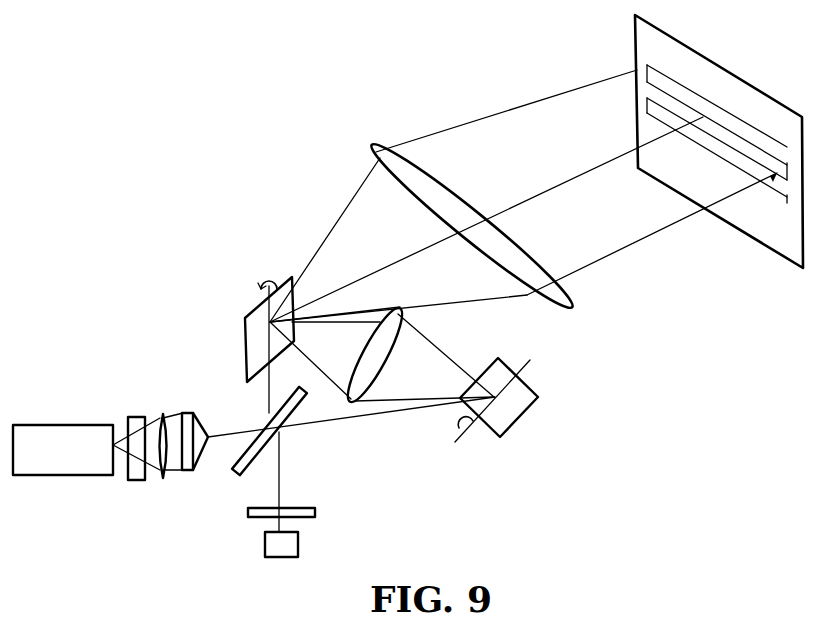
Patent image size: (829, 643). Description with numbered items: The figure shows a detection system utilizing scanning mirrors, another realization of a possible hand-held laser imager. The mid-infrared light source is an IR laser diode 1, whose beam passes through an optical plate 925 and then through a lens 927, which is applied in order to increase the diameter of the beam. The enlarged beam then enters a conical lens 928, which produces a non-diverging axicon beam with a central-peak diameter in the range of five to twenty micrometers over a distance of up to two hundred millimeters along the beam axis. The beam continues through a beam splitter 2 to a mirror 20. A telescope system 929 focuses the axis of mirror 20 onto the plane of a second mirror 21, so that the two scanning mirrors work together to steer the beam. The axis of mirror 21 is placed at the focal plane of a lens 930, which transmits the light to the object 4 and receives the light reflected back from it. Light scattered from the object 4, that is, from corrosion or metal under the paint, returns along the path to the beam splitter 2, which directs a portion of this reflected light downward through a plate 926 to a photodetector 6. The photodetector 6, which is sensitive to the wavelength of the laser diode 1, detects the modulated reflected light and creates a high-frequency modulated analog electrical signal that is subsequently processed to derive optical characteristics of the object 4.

The IR laser diode 1 is at (63, 450).
The optical plate 925 is at (127, 417).
The lens 927 is at (163, 415).
The conical lens 928 is at (190, 412).
The beam splitter 2 is at (269, 431).
The filter plate 926 is at (298, 505).
The photodetector 6 is at (281, 544).
The mirror 20 is at (496, 409).
The telescope system 929 is at (385, 363).
The mirror 21 is at (259, 329).
The lens 930 is at (459, 196).
The object 4 is at (719, 141).